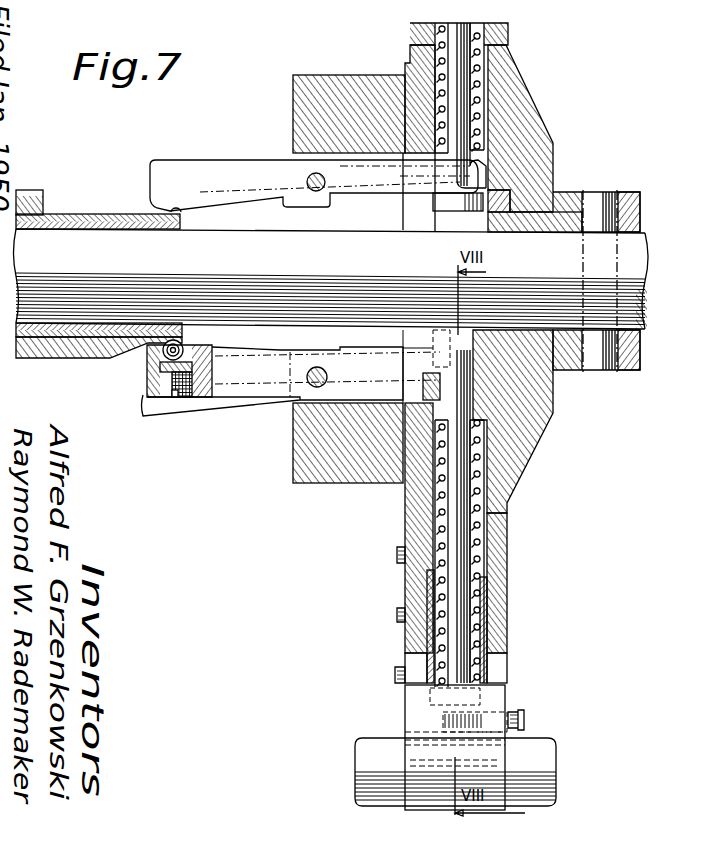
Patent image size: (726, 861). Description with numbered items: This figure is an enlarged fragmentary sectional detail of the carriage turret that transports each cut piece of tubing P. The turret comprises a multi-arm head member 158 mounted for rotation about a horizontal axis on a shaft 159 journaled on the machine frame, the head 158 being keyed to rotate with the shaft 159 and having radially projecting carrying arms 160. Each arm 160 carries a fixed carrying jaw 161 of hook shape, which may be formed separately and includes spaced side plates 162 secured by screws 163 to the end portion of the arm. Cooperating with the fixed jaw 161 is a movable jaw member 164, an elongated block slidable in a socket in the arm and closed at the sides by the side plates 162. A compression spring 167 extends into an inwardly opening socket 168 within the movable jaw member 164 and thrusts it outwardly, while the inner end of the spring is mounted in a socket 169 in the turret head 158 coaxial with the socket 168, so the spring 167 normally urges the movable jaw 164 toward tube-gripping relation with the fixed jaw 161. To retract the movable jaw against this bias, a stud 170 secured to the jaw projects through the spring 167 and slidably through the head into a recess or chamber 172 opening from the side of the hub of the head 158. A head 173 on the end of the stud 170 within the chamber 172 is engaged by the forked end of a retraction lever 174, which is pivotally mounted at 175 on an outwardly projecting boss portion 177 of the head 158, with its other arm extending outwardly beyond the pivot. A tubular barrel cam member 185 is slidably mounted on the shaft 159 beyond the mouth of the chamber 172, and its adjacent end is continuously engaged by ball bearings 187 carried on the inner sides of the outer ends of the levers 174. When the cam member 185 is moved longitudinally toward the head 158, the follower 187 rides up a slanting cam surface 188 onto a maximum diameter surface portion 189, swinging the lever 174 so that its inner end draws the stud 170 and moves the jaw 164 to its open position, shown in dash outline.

The multi-arm head member 158 is at (520, 450).
The shaft 159 is at (612, 267).
The carrying arms 160 is at (505, 40).
The fixed carrying jaw 161 is at (503, 782).
The side plates 162 is at (502, 620).
The screws 163 is at (401, 612).
The movable jaw member 164 is at (488, 665).
The compression spring 167 is at (478, 97).
The inwardly opening socket 168 is at (481, 606).
The socket 169 is at (482, 110).
The stud 170 is at (463, 72).
The recess or chamber 172 is at (550, 138).
The head 173 is at (487, 333).
The forked retraction lever 174 is at (270, 162).
The pivot 175 is at (316, 191).
The boss portion 177 is at (362, 75).
The tubular barrel cam member 185 is at (74, 358).
The ball bearings 187 is at (179, 209).
The slanting cam surface 188 is at (133, 348).
The maximum diameter surface portion 189 is at (62, 358).
The tubing P is at (540, 783).